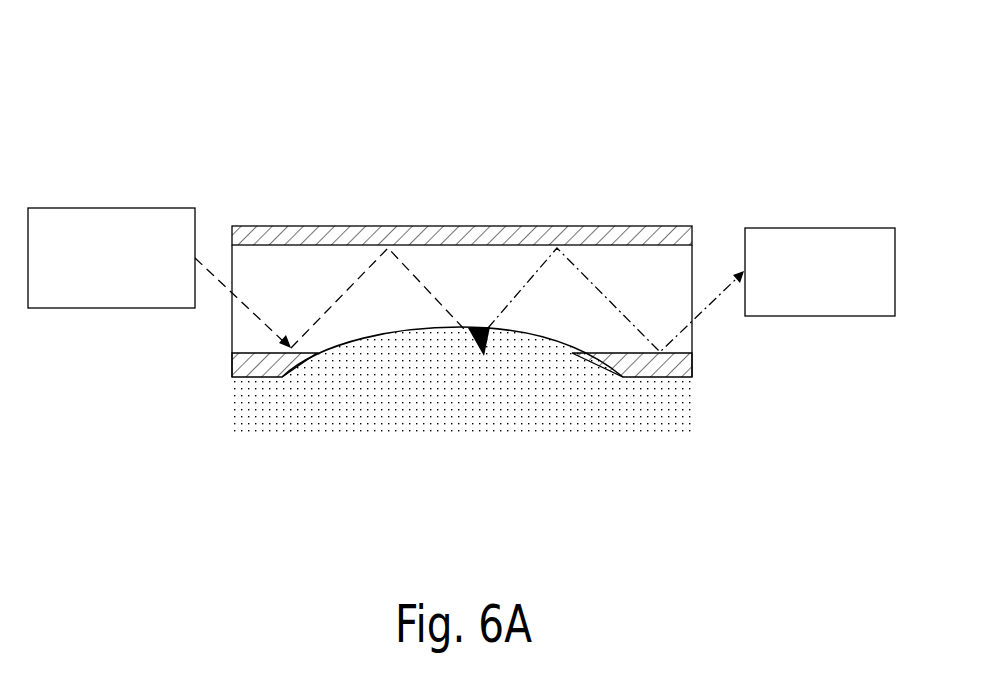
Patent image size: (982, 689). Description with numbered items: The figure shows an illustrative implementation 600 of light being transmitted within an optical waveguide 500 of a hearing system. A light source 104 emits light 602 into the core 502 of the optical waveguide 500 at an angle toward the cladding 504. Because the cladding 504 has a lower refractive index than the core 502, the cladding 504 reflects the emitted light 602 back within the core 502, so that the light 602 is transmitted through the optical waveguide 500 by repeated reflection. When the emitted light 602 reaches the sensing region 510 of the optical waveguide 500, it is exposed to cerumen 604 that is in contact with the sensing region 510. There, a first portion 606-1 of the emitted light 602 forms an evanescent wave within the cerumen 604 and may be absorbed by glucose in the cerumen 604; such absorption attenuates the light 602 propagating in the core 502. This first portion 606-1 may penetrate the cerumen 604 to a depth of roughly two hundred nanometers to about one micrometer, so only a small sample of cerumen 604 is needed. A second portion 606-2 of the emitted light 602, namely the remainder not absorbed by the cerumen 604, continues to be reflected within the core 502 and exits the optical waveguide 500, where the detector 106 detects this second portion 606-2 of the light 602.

The implementation 600 is at (227, 71).
The light source 104 is at (127, 285).
The detector 106 is at (835, 296).
The optical waveguide 500 is at (338, 226).
The core 502 is at (478, 263).
The cladding 504 is at (515, 238).
The sensing region 510 is at (362, 336).
The emitted light 602 is at (258, 317).
The cerumen 604 is at (258, 408).
The first portion of the emitted light 606-1 is at (483, 335).
The second portion of the emitted light 606-2 is at (618, 310).